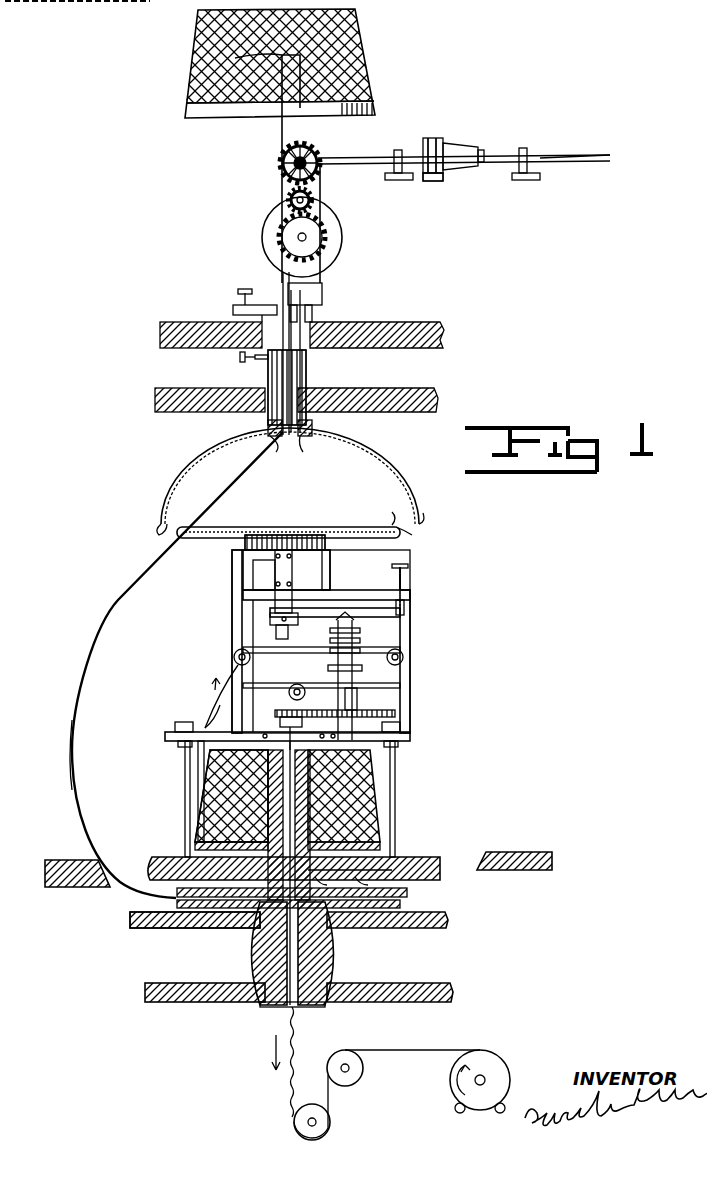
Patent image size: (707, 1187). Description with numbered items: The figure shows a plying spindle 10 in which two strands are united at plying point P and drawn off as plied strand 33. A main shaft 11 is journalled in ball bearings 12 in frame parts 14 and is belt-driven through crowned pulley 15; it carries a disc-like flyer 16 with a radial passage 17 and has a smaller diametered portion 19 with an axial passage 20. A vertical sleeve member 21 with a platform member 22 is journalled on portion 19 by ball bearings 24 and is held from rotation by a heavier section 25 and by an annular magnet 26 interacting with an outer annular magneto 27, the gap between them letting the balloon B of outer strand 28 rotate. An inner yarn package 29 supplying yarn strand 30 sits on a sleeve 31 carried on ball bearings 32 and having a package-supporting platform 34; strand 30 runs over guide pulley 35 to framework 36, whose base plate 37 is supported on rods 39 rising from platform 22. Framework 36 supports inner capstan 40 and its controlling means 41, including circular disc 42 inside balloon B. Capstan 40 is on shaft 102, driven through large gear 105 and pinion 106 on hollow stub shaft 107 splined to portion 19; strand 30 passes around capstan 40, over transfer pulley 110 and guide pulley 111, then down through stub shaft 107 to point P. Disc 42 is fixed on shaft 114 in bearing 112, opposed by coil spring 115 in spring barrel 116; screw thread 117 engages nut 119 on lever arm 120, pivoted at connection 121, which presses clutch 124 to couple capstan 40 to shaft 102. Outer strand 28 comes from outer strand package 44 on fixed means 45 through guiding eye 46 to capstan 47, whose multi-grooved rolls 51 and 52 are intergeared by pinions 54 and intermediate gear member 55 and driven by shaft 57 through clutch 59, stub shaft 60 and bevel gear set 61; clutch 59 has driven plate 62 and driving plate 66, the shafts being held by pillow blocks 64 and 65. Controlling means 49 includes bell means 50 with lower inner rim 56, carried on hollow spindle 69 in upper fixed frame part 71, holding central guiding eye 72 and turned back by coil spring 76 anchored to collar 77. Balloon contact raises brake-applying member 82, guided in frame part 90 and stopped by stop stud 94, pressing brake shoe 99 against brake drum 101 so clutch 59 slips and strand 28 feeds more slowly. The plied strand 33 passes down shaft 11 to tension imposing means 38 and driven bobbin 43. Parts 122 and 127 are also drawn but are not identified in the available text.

The spindle 10 is at (501, 668).
The main shaft 11 is at (262, 1007).
The ball bearings 12 is at (340, 930).
The frame parts 14 is at (172, 928).
The crowned pulley 15 is at (332, 960).
The disc-like flyer 16 is at (407, 893).
The radial strand-conducting passage 17 is at (178, 904).
The smaller diametered portion 19 is at (215, 807).
The axial passage 20 is at (405, 757).
The vertical sleeve member 21 is at (272, 727).
The platform member 22 is at (395, 848).
The ball bearings 24 is at (400, 745).
The heavier section 25 is at (185, 845).
The annular magnet 26 is at (150, 848).
The outer annular magneto 27 is at (65, 860).
The outer strand 28 is at (282, 144).
The inner yarn package 29 is at (210, 787).
The yarn strand 30 is at (208, 700).
The sleeve 31 is at (210, 776).
The ball bearings 32 is at (375, 772).
The plied strand 33 is at (296, 1037).
The package-supporting platform 34 is at (350, 880).
The guide pulley 35 is at (233, 652).
The framework 36 is at (222, 606).
The base plate 37 is at (208, 722).
The constant tension imposing means 38 is at (354, 1108).
The rods 39 is at (185, 760).
The capstan 40 is at (365, 670).
The capstan controlling means 41 is at (368, 575).
The circular disc 42 is at (228, 525).
The driven bobbin 43 is at (500, 1068).
The outer strand package 44 is at (375, 50).
The fixed means 45 is at (218, 110).
The fixed guiding eye 46 is at (200, 70).
The capstan 47 is at (258, 221).
The capstan controlling means 49 is at (197, 367).
The bell means 50 is at (395, 470).
The multi-grooved roll 51 is at (322, 232).
The multi-grooved roll 52 is at (281, 175).
The pinions 54 is at (320, 148).
The intermediate gear member 55 is at (312, 206).
The lower inner rim 56 is at (412, 535).
The shaft 57 is at (598, 153).
The clutch 59 is at (458, 134).
The stub shaft 60 is at (392, 140).
The bevel gear set 61 is at (330, 158).
The driven clutch plate 62 is at (425, 181).
The pillow block 64 is at (432, 138).
The pillow block 65 is at (527, 148).
The driving clutch plate 66 is at (443, 181).
The hollow spindle 69 is at (268, 378).
The upper fixed frame part 71 is at (425, 388).
The central guiding eye 72 is at (286, 440).
The coil spring 76 is at (306, 382).
The collar 77 is at (306, 360).
The brake-applying member 82 is at (273, 296).
The upper fixed frame part 90 is at (420, 322).
The adjustable stop stud 94 is at (233, 309).
The brake shoe 99 is at (322, 295).
The brake drum 101 is at (262, 258).
The shaft 102 is at (357, 705).
The large gear 105 is at (395, 714).
The pinion 106 is at (292, 685).
The hollow stub shaft 107 is at (283, 752).
The transfer pulley 110 is at (403, 654).
The guide pulley 111 is at (343, 660).
The bearing 112 is at (293, 574).
The shaft 114 is at (278, 580).
The coil spring 115 is at (325, 545).
The spring barrel 116 is at (245, 545).
The screw thread 117 is at (290, 634).
The nut 119 is at (272, 630).
The lever arm 120 is at (400, 618).
The pivotal connection 121 is at (410, 608).
The screw 122 is at (408, 580).
The clutch 124 is at (372, 638).
The hook 127 is at (388, 510).
The balloon B is at (79, 678).
The plying point P is at (252, 942).